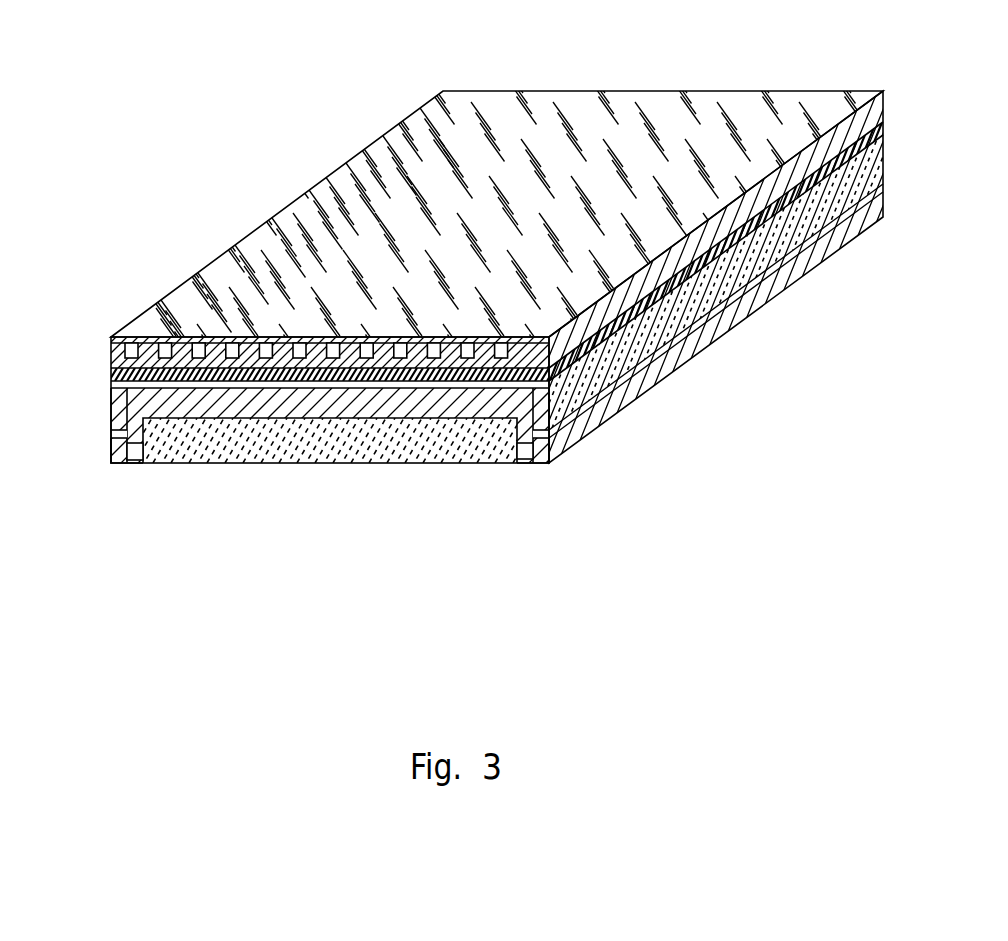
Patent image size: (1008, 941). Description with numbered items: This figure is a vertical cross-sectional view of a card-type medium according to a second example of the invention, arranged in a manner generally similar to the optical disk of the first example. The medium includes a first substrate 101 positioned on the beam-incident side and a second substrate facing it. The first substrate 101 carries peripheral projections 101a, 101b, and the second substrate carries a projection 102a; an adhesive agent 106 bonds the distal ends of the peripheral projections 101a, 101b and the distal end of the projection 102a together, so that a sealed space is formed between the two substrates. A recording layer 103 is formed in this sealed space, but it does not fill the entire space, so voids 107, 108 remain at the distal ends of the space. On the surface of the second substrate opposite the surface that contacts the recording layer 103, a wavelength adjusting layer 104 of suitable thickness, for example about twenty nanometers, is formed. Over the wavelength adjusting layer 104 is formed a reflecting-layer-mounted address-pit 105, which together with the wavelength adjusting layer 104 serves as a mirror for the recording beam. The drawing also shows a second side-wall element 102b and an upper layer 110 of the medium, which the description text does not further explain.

The first substrate 101 is at (241, 455).
The peripheral projection 101a is at (540, 465).
The peripheral projection 101b is at (116, 465).
The projection 102a is at (551, 397).
The second side wall 102b is at (111, 404).
The recording layer 103 is at (355, 405).
The wavelength adjusting layer 104 is at (563, 365).
The reflecting-layer-mounted address-pit 105 is at (385, 350).
The adhesive agent 106 is at (553, 429).
The void 107 is at (132, 465).
The void 108 is at (522, 465).
The top cover plate 110 is at (240, 290).